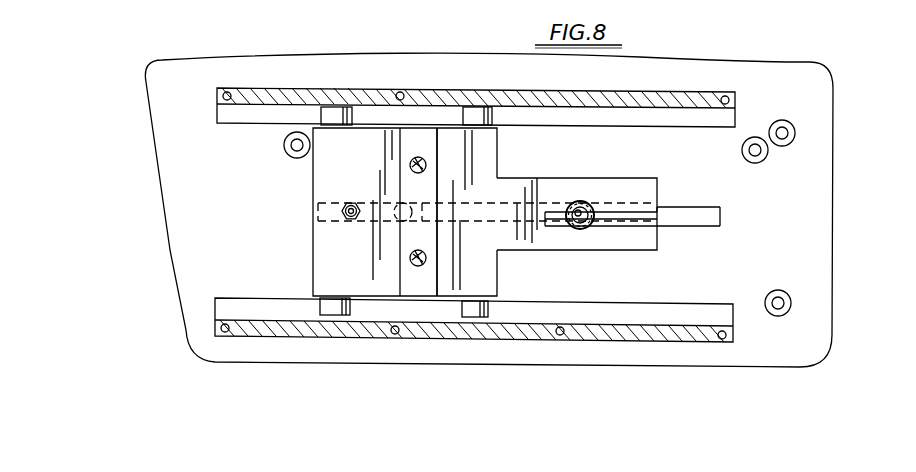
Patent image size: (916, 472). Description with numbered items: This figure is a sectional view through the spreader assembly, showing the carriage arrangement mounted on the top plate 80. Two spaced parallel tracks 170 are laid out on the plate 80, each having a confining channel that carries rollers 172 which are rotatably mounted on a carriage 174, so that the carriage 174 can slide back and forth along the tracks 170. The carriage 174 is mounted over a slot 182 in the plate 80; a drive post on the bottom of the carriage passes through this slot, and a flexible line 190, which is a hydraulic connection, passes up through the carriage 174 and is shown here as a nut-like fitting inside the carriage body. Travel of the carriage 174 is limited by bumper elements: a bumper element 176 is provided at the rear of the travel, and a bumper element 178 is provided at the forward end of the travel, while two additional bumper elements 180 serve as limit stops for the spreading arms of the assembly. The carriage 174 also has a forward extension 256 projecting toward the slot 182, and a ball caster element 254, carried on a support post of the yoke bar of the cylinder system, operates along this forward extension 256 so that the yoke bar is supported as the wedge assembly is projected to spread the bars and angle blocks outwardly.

The plate 80 is at (746, 66).
The tracks 170 is at (281, 94).
The rollers 172 is at (342, 117).
The carriage 174 is at (325, 182).
The bumper element 176 is at (284, 146).
The bumper element 178 is at (768, 152).
The bumper elements 180 is at (790, 126).
The slot 182 is at (710, 210).
The flexible line 190 is at (352, 200).
The ball caster element 254 is at (580, 229).
The forward extension 256 is at (612, 192).